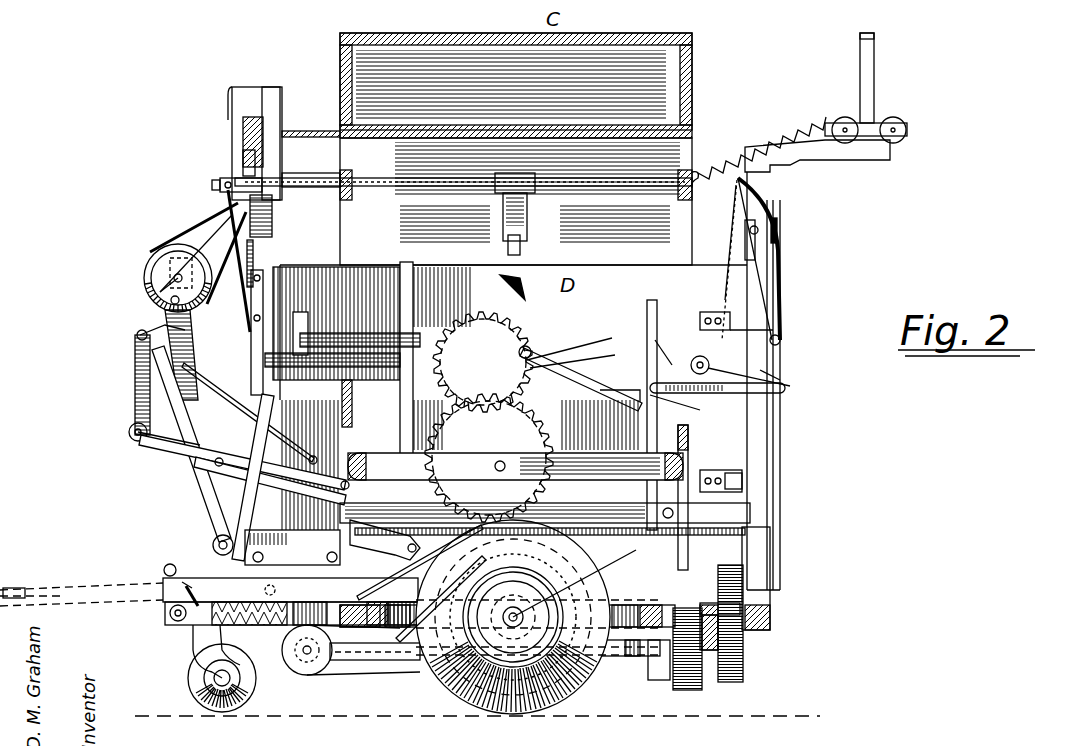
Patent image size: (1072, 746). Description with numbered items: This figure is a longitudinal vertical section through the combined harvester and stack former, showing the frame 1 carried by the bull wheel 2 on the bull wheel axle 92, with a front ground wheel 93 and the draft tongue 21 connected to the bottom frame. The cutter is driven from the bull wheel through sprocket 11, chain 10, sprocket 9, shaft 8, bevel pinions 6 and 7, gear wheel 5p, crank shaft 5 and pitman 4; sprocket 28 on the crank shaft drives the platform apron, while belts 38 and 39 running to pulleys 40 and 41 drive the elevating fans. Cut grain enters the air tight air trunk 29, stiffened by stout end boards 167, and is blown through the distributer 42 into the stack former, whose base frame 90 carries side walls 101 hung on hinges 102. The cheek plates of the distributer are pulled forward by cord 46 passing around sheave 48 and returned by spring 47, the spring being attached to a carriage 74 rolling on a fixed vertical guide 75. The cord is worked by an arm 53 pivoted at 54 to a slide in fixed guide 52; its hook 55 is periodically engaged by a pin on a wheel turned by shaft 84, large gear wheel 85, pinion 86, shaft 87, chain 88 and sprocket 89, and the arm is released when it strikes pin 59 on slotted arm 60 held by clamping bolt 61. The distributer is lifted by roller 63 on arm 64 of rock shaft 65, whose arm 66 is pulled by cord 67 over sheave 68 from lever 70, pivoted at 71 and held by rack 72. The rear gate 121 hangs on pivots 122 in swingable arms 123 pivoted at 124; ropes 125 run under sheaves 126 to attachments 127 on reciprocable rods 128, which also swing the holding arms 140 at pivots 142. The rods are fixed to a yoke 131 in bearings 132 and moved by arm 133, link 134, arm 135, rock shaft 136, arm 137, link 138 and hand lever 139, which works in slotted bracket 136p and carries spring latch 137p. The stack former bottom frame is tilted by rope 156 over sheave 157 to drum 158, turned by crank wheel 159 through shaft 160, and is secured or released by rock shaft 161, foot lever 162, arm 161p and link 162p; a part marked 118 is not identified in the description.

The air trunk 29 is at (456, 38).
The distributer 42 is at (516, 201).
The rock shaft 65 is at (378, 179).
The arm 64 is at (503, 220).
The roller 63 is at (528, 253).
The spring 47 is at (722, 165).
The carriage 74 is at (838, 126).
The fixed vertical guide 75 is at (860, 61).
The gate 121 is at (770, 572).
The pivots 124 is at (760, 232).
The ropes 125 is at (706, 245).
The side walls 101 is at (513, 285).
The hinges 102 is at (736, 320).
The swingable arms 123 is at (774, 327).
The pivots 122 is at (782, 341).
The pivots 142 is at (778, 380).
The arms 140 is at (792, 388).
The sheaves 126 is at (698, 360).
The points of attachment 127 is at (658, 356).
The reciprocable rods 128 is at (700, 405).
The clamping bolt 61 is at (667, 435).
The slotted arm 60 is at (581, 378).
The arm 53 is at (355, 340).
The pivot 54 is at (296, 266).
The fixed guide 52 is at (302, 310).
The end boards 167 is at (698, 553).
The cord 67 is at (232, 112).
The sheave 48 is at (243, 138).
The cord 46 is at (243, 160).
The arm 66 is at (282, 157).
The sheave 68 is at (220, 188).
The drum 158 is at (148, 264).
The shaft 160 is at (172, 278).
The crank wheel 159 is at (148, 290).
The rope 156 is at (200, 226).
The sheave 157 is at (218, 235).
The belt 118 is at (210, 255).
The arm 133 is at (201, 355).
The link 134 is at (160, 325).
The arm 135 is at (137, 350).
The arm 137 is at (152, 392).
The link 138 is at (213, 378).
The rock shaft 136 is at (129, 432).
The hand or foot lever 70 is at (160, 437).
The yoke 131 is at (235, 490).
The slotted bracket 136p is at (270, 484).
The rack 72 is at (178, 500).
The bearings 132 is at (212, 540).
The link 162p is at (168, 560).
The arm 161p is at (165, 568).
The hand lever 139 is at (292, 547).
The foot lever 162 is at (291, 601).
The rock shaft 161 is at (172, 620).
The tongue 21 is at (75, 580).
The front ground wheel 93 is at (188, 678).
The shaft 8 is at (351, 650).
The bevel pinion 6 is at (300, 668).
The bevel pinion 7 is at (312, 672).
The sprocket 9 is at (330, 668).
The gear wheel 5p is at (390, 670).
The chain 10 is at (430, 662).
The pitman 4 is at (507, 621).
The crank shaft 5 is at (624, 668).
The frame 1 is at (622, 630).
The sprocket 11 is at (513, 604).
The sprocket 89 is at (582, 572).
The bull wheel axle 92 is at (577, 583).
The bull wheel 2 is at (578, 686).
The sprocket 28 is at (660, 680).
The belt 39 is at (687, 660).
The belt 38 is at (745, 657).
The pulley 40 is at (745, 642).
The pulley 41 is at (700, 678).
The base frame 90 is at (706, 612).
The chain 88 is at (545, 572).
The shaft 87 is at (494, 465).
The spring latch 137p is at (404, 460).
The pinion 86 is at (489, 458).
The shoulder or hook 55 is at (483, 343).
The pin 59 is at (530, 350).
The large gear wheel 85 is at (569, 339).
The shaft 84 is at (576, 346).
The pivot 71 is at (404, 544).